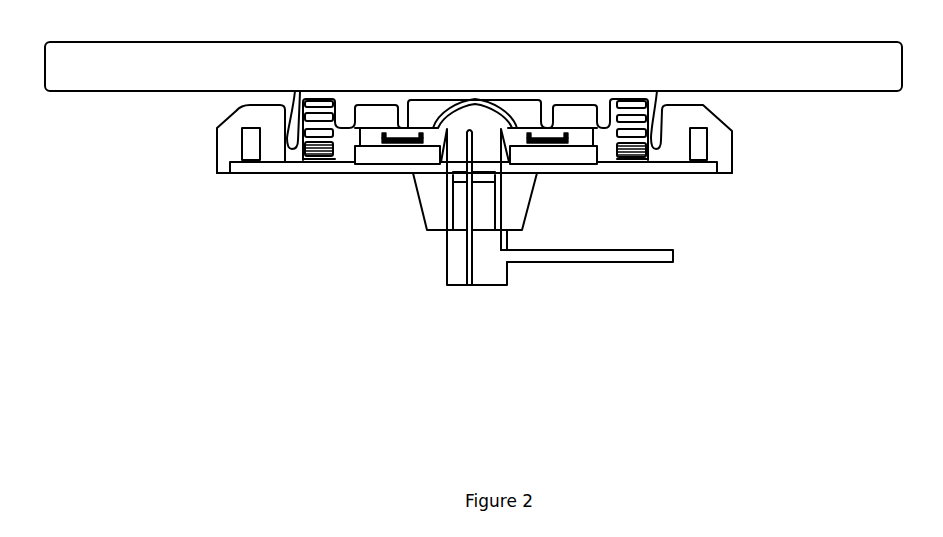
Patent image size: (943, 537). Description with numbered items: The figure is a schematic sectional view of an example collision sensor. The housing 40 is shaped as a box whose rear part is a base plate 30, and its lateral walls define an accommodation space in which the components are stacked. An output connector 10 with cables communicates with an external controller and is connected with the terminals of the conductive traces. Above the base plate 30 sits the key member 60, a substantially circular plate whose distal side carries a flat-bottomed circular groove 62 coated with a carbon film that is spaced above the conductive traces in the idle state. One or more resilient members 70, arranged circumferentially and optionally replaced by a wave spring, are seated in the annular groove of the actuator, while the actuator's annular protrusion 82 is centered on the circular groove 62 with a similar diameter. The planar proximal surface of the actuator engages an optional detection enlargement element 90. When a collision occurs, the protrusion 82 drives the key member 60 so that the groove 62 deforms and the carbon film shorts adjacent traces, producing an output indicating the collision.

The output connector 10 is at (510, 292).
The base plate 30 is at (245, 183).
The housing 40 is at (733, 160).
The key member 60 is at (579, 143).
The circular groove 62 is at (394, 150).
The resilient member 70 is at (643, 167).
The annular protrusion 82 is at (395, 115).
The detection enlargement element 90 is at (847, 110).